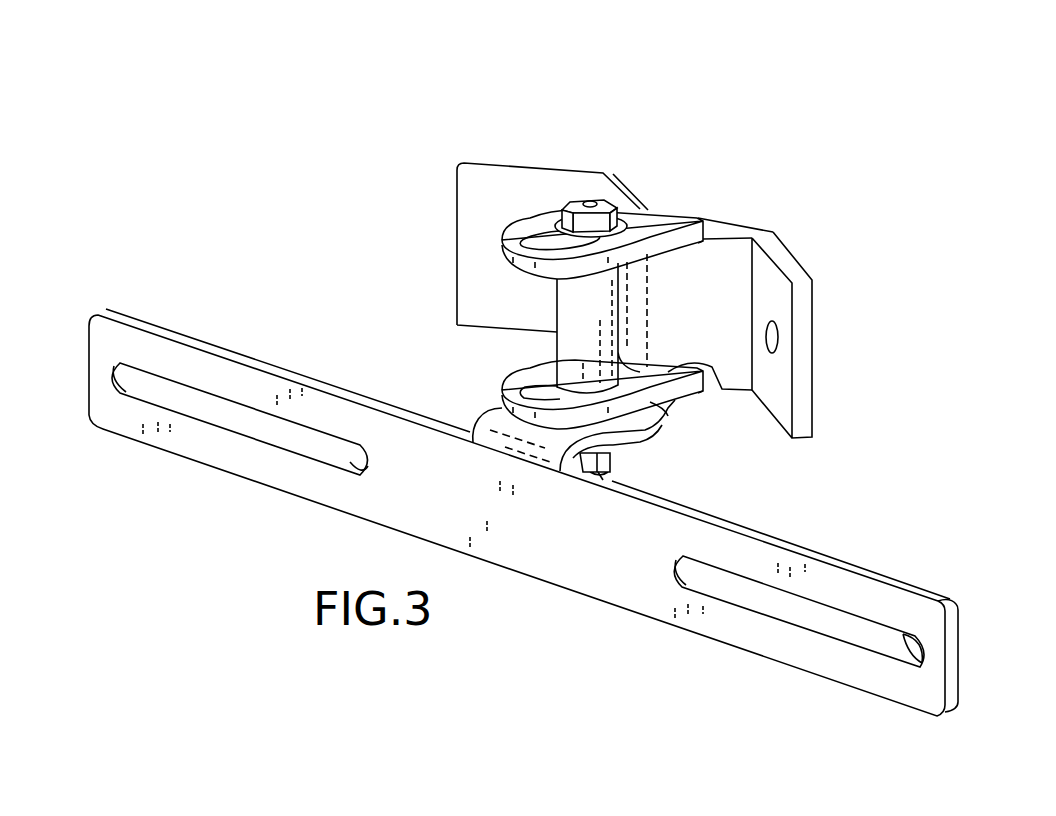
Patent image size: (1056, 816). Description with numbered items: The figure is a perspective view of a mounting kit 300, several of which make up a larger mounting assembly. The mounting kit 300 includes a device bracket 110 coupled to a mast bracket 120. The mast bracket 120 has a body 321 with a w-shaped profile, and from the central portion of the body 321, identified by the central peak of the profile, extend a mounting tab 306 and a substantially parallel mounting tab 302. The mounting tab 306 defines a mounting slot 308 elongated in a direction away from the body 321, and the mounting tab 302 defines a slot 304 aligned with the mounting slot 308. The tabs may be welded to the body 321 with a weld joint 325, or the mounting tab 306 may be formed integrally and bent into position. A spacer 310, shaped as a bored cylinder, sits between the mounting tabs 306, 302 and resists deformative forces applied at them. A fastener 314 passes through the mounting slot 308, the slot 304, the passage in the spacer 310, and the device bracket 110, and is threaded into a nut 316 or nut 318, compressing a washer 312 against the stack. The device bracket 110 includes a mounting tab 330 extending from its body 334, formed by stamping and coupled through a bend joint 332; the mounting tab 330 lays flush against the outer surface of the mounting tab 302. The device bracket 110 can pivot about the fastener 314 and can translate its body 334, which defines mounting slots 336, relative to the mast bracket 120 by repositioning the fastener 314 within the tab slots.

The mounting kit 300 is at (243, 126).
The device bracket 110 is at (885, 575).
The mast bracket 120 is at (813, 326).
The mounting tab 302 is at (515, 390).
The slot 304 is at (550, 392).
The mounting tab 306 is at (522, 228).
The mounting slot 308 is at (553, 245).
The spacer 310 is at (568, 310).
The washer 312 is at (508, 238).
The fastener 314 is at (602, 191).
The nut 316 is at (610, 450).
The nut 318 is at (603, 477).
The body 321 is at (713, 242).
The weld joint 325 is at (705, 373).
The mounting tab 330 is at (668, 416).
The bend joint 332 is at (490, 423).
The body 334 is at (735, 520).
The mounting slots 336 is at (177, 405).